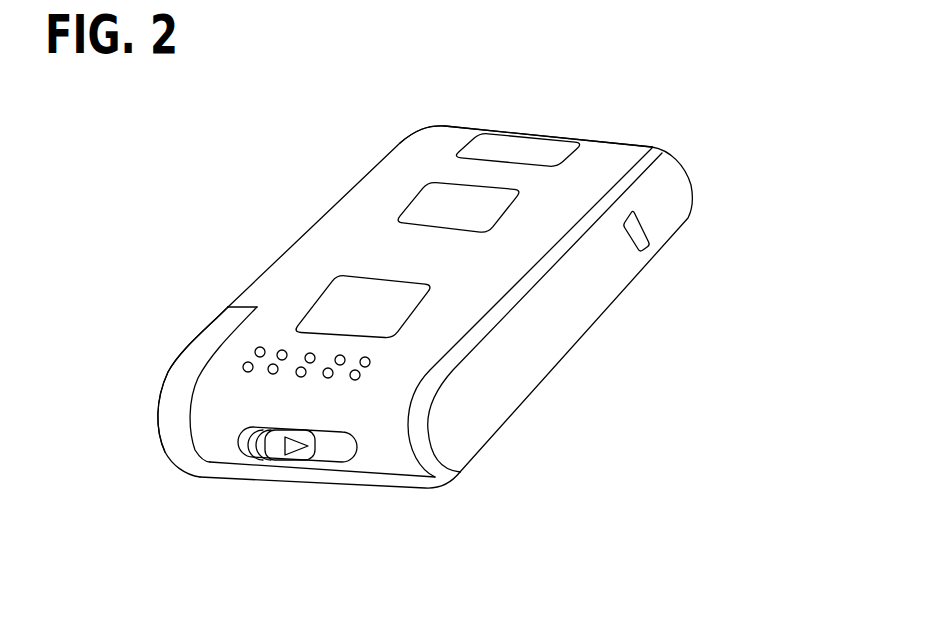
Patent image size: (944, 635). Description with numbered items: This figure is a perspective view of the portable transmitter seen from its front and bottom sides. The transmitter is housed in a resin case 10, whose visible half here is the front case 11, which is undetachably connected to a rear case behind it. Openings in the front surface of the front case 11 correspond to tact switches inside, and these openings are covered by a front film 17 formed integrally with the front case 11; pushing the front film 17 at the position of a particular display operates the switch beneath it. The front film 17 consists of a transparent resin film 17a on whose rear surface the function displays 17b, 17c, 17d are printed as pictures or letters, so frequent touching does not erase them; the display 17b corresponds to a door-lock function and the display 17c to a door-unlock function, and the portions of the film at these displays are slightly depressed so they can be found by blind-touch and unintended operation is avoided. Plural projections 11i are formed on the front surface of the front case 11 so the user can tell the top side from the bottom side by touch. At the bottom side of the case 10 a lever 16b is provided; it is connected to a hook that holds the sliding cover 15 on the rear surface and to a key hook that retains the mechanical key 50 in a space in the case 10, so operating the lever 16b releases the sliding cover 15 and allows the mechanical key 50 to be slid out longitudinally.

The case 10 is at (510, 433).
The front case 11 is at (375, 410).
The projections 11i is at (355, 380).
The sliding cover 15 is at (417, 490).
The lever 16b is at (280, 458).
The front film 17 is at (365, 196).
The transparent resin film 17a is at (368, 263).
The function display 17b is at (535, 147).
The function display 17c is at (420, 207).
The function display 17d is at (327, 325).
The mechanical key 50 is at (172, 430).